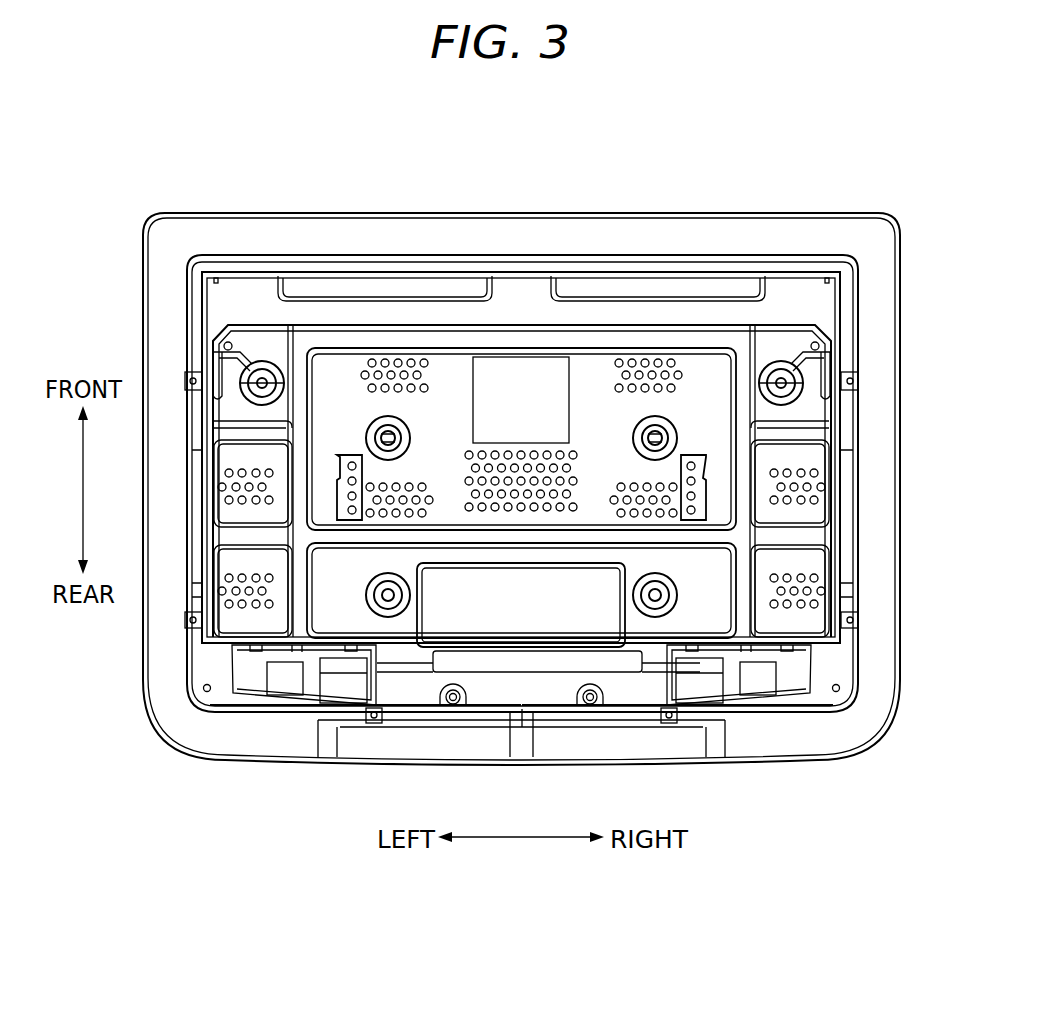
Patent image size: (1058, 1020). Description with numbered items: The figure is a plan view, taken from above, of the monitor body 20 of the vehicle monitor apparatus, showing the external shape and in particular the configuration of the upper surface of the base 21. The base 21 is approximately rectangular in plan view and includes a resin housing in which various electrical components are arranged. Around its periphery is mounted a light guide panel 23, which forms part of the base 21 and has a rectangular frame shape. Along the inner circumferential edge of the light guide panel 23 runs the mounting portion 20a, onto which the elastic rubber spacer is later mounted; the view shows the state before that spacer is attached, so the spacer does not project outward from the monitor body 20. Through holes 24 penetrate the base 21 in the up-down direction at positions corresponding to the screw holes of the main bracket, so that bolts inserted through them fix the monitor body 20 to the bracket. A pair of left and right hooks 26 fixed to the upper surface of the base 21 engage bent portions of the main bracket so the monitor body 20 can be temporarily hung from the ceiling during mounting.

The monitor body 20 is at (834, 201).
The mounting portion 20a is at (860, 570).
The base 21 is at (522, 293).
The light guide panel 23 is at (888, 295).
The through holes 24 is at (372, 422).
The hooks 26 is at (347, 455).